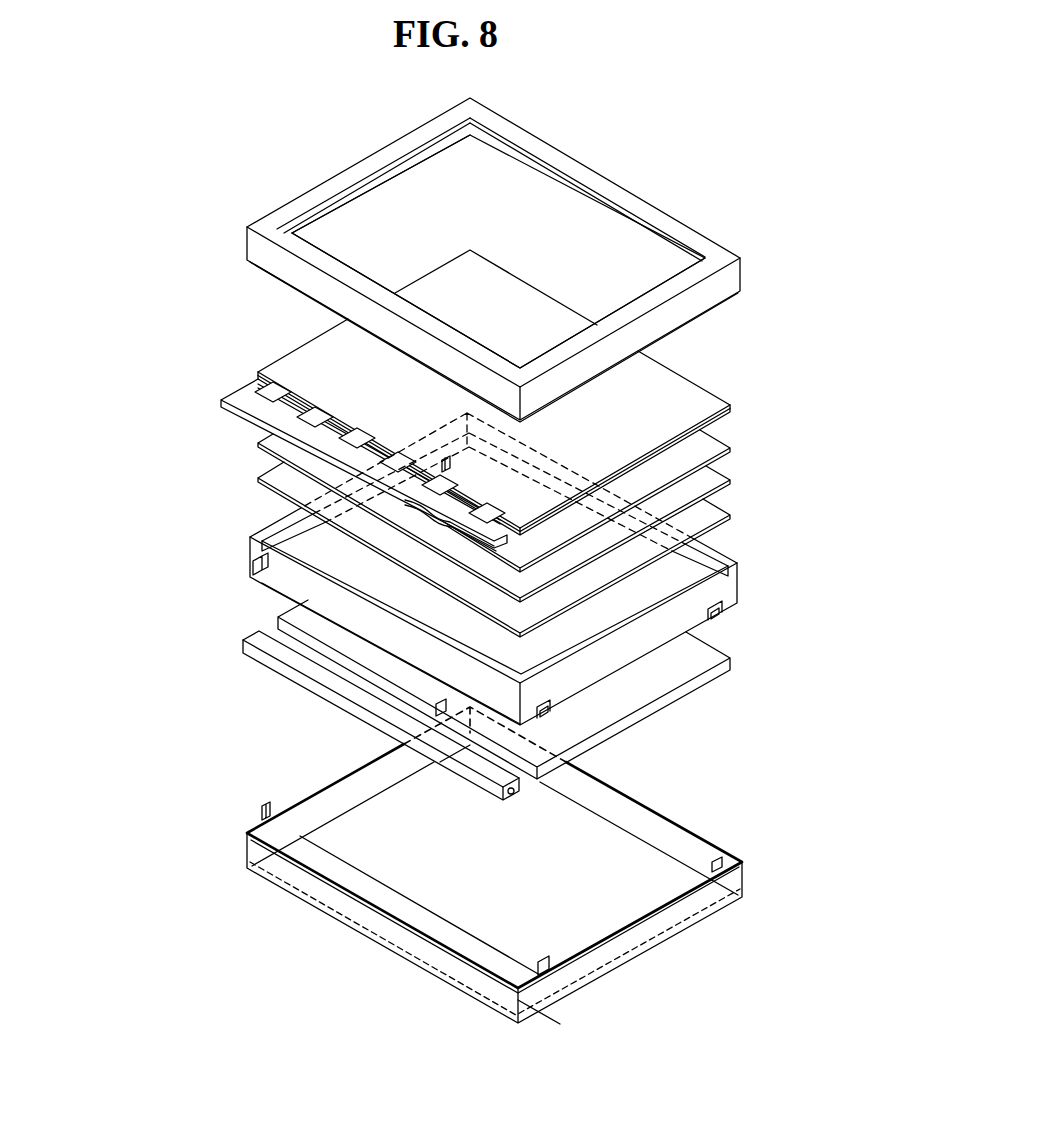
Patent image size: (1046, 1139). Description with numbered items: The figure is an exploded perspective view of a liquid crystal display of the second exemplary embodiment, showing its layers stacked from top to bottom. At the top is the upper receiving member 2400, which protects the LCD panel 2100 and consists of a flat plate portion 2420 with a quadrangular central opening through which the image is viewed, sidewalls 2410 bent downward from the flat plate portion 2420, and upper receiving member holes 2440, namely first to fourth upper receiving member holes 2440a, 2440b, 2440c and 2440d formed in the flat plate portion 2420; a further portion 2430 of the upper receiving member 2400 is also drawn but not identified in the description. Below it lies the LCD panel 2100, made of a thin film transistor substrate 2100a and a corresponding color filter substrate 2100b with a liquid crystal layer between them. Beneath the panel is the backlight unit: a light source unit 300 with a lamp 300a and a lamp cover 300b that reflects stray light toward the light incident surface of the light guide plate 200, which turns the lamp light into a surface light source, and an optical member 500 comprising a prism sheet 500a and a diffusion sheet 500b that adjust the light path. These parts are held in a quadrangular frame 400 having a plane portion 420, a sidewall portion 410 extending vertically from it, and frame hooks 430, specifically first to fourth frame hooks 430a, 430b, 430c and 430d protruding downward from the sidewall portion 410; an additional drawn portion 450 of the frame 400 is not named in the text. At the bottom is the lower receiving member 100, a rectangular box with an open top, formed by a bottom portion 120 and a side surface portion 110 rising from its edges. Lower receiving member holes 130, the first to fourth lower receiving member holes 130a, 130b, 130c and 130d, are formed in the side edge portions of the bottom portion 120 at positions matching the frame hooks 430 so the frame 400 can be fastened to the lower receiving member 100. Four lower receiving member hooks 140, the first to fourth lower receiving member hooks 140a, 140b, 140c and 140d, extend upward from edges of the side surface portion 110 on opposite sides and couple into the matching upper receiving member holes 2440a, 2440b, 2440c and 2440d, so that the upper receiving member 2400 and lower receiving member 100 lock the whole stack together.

The lower receiving member 100 is at (436, 879).
The side surface portion 110 is at (412, 873).
The bottom portion 120 is at (650, 853).
The lower receiving member holes 130 is at (407, 873).
The first lower receiving member hole 130a is at (713, 920).
The second lower receiving member hole 130b is at (547, 1005).
The third lower receiving member hole 130c is at (247, 840).
The fourth lower receiving member hole 130d is at (437, 760).
The lower receiving member hooks 140 is at (426, 879).
The first lower receiving member hook 140a is at (742, 862).
The second lower receiving member hook 140b is at (567, 960).
The third lower receiving member hook 140c is at (268, 805).
The fourth lower receiving member hook 140d is at (440, 708).
The light guide plate 200 is at (730, 659).
The light source unit 300 is at (477, 715).
The lamp 300a is at (540, 790).
The lamp cover 300b is at (522, 778).
The frame 400 is at (424, 563).
The sidewall portion 410 is at (703, 552).
The plane portion 420 is at (737, 568).
The frame hooks 430 is at (424, 559).
The first frame hook 430a is at (716, 620).
The second frame hook 430b is at (555, 717).
The third frame hook 430c is at (255, 568).
The fourth frame hook 430d is at (445, 458).
The mold frame lower portion 450 is at (690, 618).
The optical member 500 is at (552, 533).
The prism sheet 500a is at (730, 449).
The diffusion sheet 500b is at (730, 516).
The LCD panel 2100 is at (561, 427).
The thin film transistor substrate 2100a is at (730, 411).
The color filter substrate 2100b is at (730, 404).
The upper receiving member 2400 is at (539, 255).
The sidewalls 2410 is at (733, 275).
The flat plate portion 2420 is at (710, 243).
The top chassis lower edge 2430 is at (690, 330).
The upper receiving member holes 2440 is at (536, 250).
The first upper receiving member hole 2440a is at (680, 250).
The second upper receiving member hole 2440b is at (535, 372).
The third upper receiving member hole 2440c is at (270, 216).
The fourth upper receiving member hole 2440d is at (445, 118).